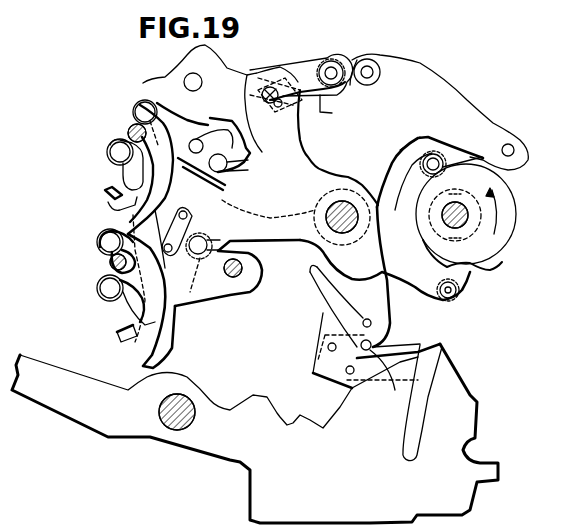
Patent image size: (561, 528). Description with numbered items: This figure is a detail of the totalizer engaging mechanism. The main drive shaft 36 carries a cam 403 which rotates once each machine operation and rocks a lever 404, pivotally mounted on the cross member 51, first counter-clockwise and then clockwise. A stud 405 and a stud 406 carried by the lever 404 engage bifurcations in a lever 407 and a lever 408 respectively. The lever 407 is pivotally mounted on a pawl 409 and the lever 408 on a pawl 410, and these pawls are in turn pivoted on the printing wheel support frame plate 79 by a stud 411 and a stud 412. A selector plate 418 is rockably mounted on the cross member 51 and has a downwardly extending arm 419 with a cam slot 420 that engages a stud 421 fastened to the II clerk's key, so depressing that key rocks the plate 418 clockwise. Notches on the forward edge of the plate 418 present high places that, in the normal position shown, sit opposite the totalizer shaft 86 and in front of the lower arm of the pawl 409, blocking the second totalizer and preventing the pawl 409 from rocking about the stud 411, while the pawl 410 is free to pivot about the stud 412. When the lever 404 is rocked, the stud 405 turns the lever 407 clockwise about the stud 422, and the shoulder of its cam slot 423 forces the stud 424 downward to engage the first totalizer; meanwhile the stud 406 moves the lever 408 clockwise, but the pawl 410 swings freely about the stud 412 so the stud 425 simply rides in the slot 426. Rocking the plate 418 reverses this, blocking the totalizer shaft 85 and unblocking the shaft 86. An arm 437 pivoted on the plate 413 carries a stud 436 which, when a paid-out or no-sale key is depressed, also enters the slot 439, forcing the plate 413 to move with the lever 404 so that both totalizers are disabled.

The clerk's key II is at (70, 410).
The printing wheel support frame plate 79 is at (458, 100).
The arm 437 is at (308, 70).
The stud 436 is at (268, 90).
The plate 413 is at (343, 109).
The slot 439 is at (338, 147).
The lever 404 is at (315, 176).
The cross member 51 is at (347, 210).
The cam 403 is at (492, 258).
The main drive shaft 36 is at (461, 205).
The downwardly extending arm 419 is at (380, 305).
The cam slot 420 is at (372, 325).
The stud 421 is at (365, 358).
The lever 407 is at (183, 120).
The cam slot 423 is at (219, 136).
The stud 405 is at (240, 168).
The stud 424 is at (191, 146).
The lever 408 is at (170, 220).
The slot 426 is at (190, 220).
The stud 406 is at (212, 236).
The stud 425 is at (235, 273).
The selector plate 418 is at (173, 333).
The totalizer shaft 86 is at (107, 264).
The stud 412 is at (97, 291).
The pawl 410 is at (118, 337).
The pawl 409 is at (103, 202).
The stud 411 is at (108, 147).
The totalizer shaft 85 is at (129, 129).
The stud 422 is at (138, 108).